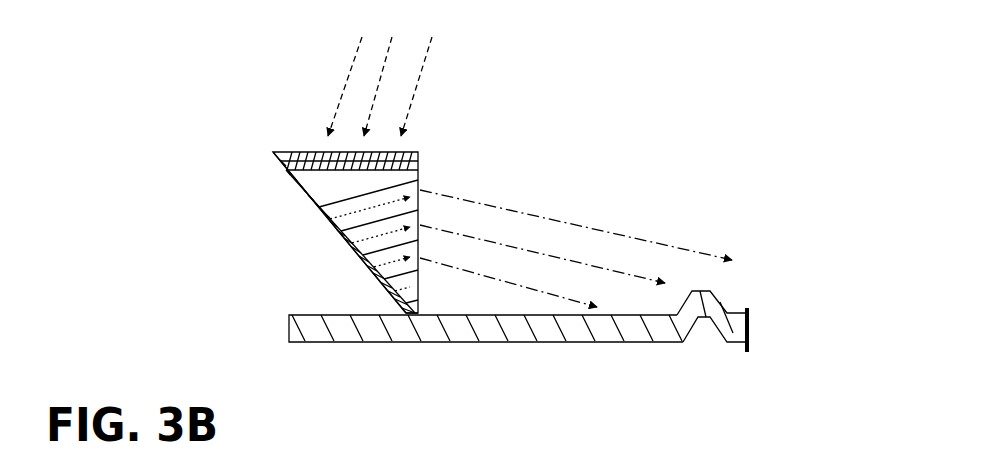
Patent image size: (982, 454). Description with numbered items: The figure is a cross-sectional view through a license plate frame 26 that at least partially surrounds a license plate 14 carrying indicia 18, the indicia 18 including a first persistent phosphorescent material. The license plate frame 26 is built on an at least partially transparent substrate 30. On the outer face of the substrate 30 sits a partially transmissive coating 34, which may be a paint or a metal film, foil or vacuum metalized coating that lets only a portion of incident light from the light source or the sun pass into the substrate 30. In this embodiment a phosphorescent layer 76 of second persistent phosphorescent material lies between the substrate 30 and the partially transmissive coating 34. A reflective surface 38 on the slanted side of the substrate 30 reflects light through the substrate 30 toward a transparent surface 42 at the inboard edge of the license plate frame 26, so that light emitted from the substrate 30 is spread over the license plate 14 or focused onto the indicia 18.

The license plate 14 is at (652, 343).
The indicia 18 is at (709, 291).
The license plate frame 26 is at (432, 103).
The substrate 30 is at (421, 191).
The partially transmissive coating 34 is at (306, 151).
The reflective surface 38 is at (322, 211).
The transparent surface 42 is at (421, 287).
The phosphorescent layer 76 is at (300, 179).